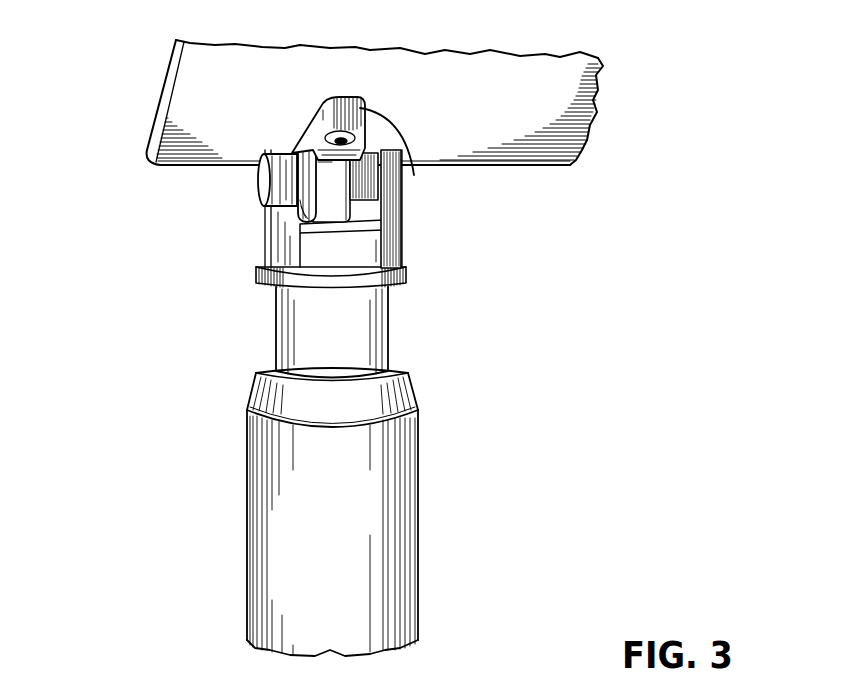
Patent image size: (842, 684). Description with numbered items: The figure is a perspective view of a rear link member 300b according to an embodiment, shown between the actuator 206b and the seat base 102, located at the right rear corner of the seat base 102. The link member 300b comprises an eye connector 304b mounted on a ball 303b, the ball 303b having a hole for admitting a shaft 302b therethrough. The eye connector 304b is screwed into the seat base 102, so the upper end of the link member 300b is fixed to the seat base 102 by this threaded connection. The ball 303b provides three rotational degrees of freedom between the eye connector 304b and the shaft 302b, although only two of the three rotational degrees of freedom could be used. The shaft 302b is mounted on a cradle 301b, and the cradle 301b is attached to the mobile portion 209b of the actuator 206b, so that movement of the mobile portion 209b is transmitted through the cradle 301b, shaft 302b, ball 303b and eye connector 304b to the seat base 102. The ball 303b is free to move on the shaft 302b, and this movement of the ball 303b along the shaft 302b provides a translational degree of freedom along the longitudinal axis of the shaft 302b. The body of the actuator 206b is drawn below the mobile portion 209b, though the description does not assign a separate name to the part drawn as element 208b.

The seat base 102 is at (183, 80).
The link member 300b is at (507, 189).
The cradle 301b is at (392, 232).
The shaft 302b is at (262, 178).
The ball 303b is at (300, 172).
The eye connector 304b is at (405, 158).
The actuator 206b is at (504, 376).
The container body 208b is at (400, 497).
The mobile portion 209b is at (388, 305).